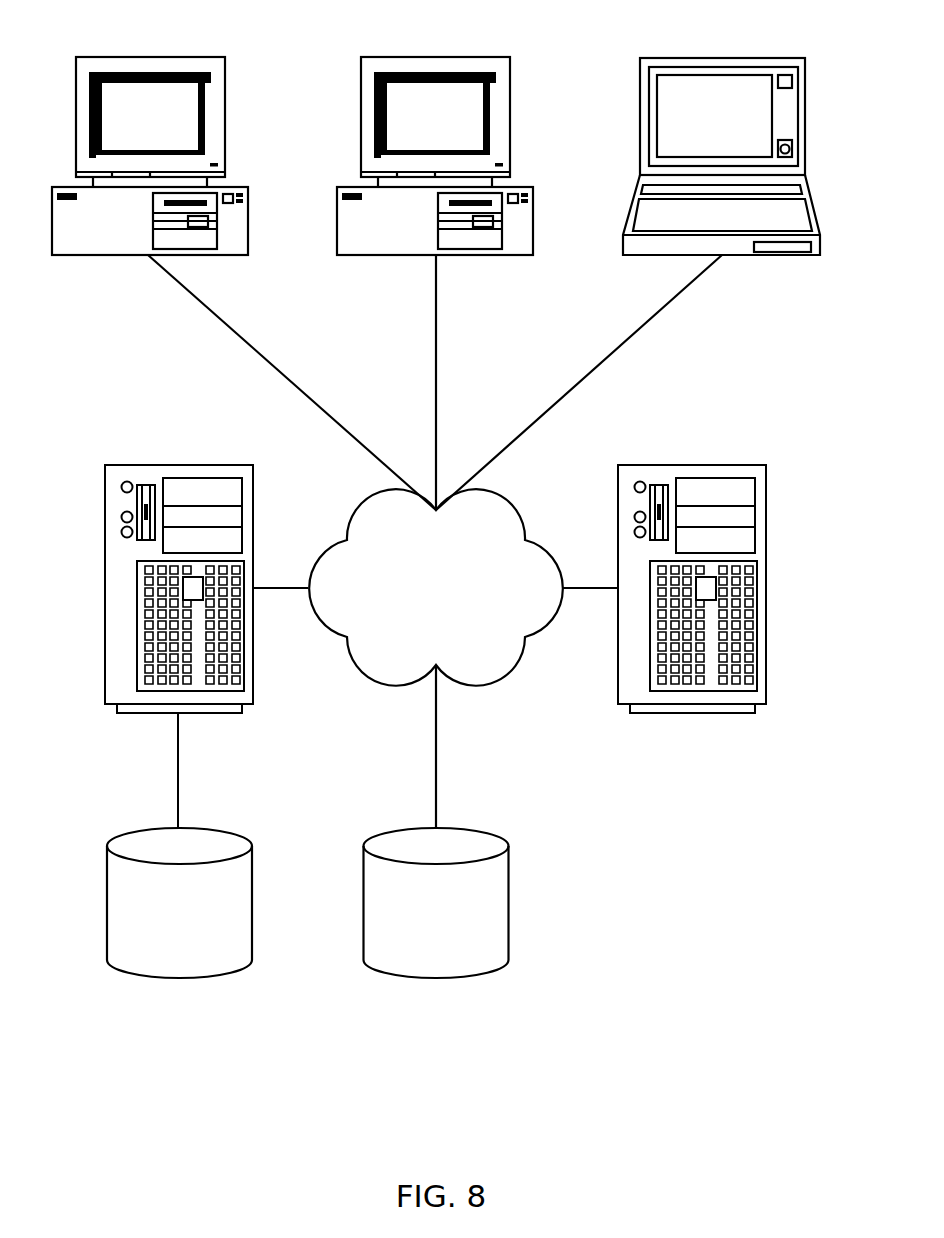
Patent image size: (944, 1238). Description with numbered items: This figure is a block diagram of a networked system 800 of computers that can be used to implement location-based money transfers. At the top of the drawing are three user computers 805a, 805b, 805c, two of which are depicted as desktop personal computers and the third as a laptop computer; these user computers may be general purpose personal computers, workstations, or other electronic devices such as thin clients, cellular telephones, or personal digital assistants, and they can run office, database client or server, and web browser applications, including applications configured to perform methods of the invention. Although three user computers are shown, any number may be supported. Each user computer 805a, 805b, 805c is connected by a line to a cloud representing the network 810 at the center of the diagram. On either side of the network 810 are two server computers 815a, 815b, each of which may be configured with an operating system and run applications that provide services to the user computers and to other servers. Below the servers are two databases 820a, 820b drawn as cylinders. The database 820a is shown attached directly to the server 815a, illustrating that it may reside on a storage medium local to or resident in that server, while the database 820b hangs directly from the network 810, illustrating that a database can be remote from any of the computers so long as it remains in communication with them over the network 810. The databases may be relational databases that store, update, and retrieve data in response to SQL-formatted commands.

The system 800 is at (680, 1028).
The user computer 805a is at (248, 205).
The user computer 805b is at (337, 205).
The user computer 805c is at (640, 157).
The network 810 is at (472, 688).
The server computer 815a is at (105, 588).
The server computer 815b is at (767, 588).
The database 820a is at (178, 978).
The database 820b is at (436, 978).